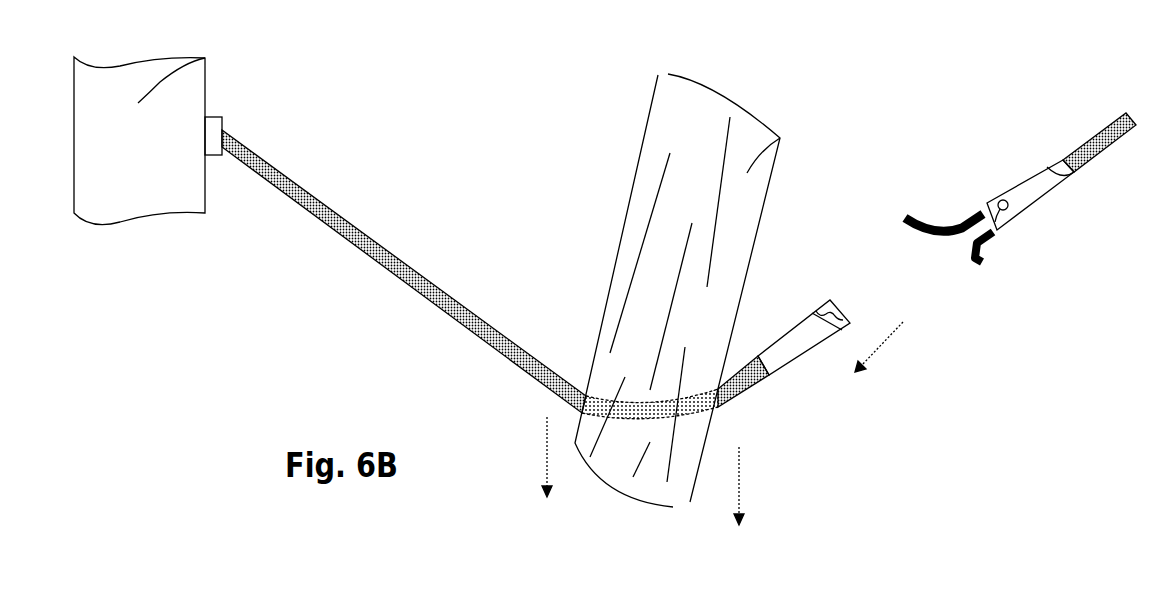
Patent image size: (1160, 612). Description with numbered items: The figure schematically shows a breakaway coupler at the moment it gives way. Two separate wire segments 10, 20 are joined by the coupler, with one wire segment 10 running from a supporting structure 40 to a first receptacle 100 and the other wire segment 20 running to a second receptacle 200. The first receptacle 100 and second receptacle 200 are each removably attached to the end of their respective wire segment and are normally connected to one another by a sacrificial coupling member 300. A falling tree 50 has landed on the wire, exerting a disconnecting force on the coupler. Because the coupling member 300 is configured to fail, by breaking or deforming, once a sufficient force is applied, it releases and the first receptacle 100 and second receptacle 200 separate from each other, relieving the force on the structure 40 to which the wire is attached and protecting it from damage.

The wire segment 10 is at (313, 193).
The wire segment 20 is at (1090, 142).
The structure 40 is at (207, 57).
The falling tree 50 is at (780, 138).
The first receptacle 100 is at (802, 350).
The second receptacle 200 is at (1023, 195).
The coupling member 300 is at (942, 223).